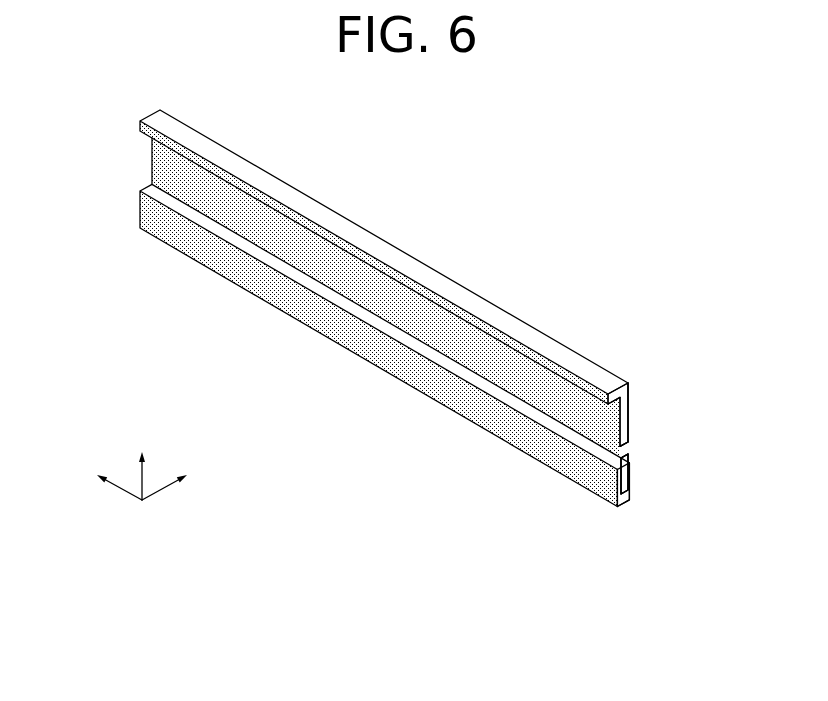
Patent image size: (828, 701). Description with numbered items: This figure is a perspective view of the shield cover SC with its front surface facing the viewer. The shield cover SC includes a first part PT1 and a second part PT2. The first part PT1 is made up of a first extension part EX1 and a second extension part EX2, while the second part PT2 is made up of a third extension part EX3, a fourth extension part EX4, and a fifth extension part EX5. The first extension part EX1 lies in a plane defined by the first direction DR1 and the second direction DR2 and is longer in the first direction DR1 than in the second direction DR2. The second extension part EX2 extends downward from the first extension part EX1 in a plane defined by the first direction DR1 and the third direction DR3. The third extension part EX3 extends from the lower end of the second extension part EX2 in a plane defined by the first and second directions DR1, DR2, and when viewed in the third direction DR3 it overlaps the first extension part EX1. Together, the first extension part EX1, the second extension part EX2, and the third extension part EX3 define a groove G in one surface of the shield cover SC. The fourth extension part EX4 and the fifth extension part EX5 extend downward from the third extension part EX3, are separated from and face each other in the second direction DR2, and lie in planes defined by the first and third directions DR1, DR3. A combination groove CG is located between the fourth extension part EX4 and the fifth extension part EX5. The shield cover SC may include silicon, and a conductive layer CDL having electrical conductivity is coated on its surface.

The conductive layer CDL is at (360, 230).
The groove G is at (300, 261).
The first extension part EX1 is at (629, 381).
The second extension part EX2 is at (628, 418).
The third extension part EX3 is at (618, 468).
The fourth extension part EX4 is at (619, 487).
The fifth extension part EX5 is at (632, 490).
The shield cover SC is at (639, 447).
The combination groove CG is at (636, 478).
The first part PT1 is at (740, 358).
The second part PT2 is at (680, 590).
The first direction DR1 is at (99, 481).
The second direction DR2 is at (184, 481).
The third direction DR3 is at (141, 462).